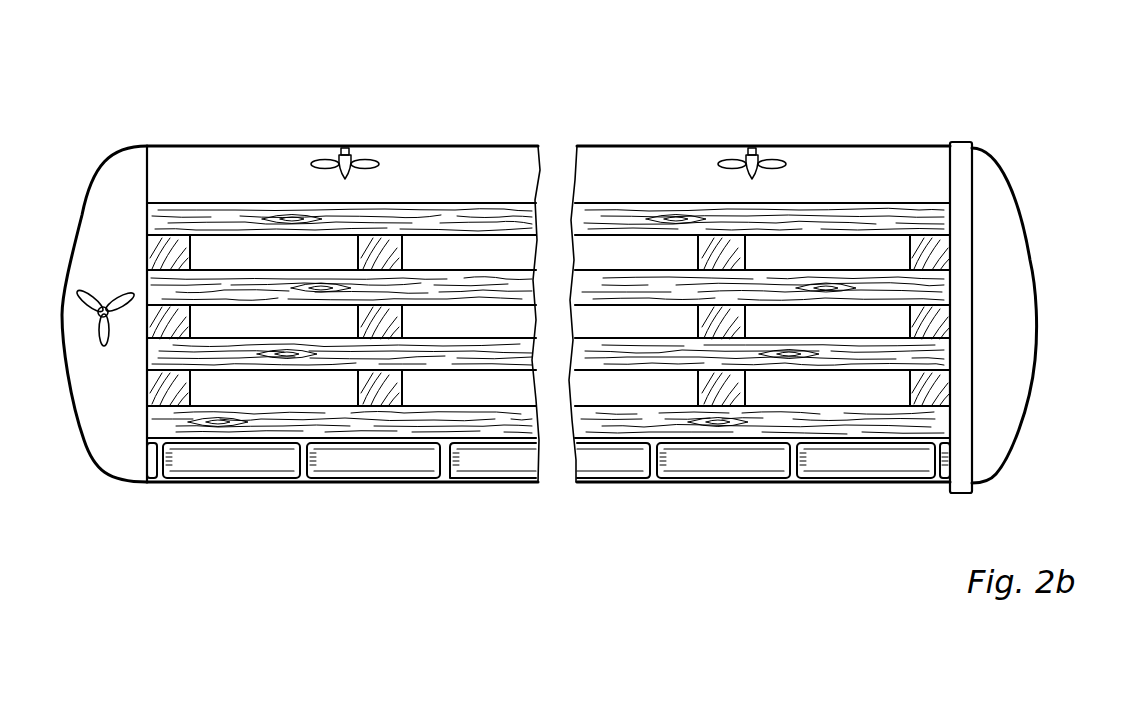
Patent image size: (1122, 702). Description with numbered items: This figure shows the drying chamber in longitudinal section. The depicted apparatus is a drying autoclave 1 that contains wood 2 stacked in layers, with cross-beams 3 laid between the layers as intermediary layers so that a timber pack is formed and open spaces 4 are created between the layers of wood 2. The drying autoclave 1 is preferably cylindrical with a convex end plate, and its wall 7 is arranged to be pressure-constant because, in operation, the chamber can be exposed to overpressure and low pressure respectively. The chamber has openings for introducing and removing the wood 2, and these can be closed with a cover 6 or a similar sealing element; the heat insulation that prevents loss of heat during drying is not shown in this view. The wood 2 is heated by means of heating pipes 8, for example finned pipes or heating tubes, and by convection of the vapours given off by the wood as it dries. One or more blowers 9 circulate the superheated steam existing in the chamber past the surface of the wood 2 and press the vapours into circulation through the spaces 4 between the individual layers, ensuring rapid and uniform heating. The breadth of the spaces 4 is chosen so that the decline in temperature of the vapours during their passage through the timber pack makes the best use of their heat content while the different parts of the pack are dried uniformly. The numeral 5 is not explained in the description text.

The drying autoclave 1 is at (183, 141).
The wood 2 is at (882, 220).
The cross-beams 3 is at (720, 248).
The open spaces 4 is at (310, 252).
The left end cap 5 is at (68, 256).
The cover 6 is at (1010, 313).
The wall 7 is at (457, 146).
The heating pipes 8 is at (548, 460).
The blowers 9 is at (737, 160).